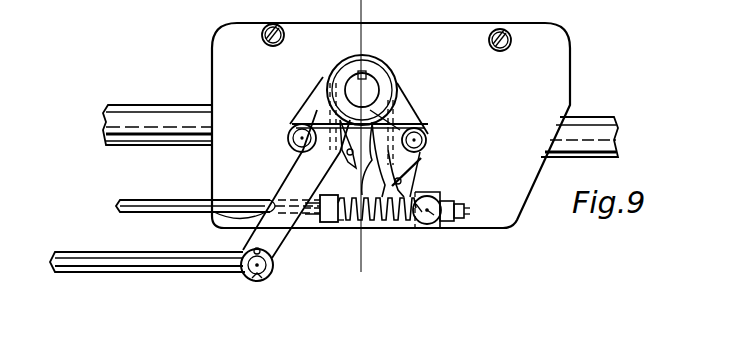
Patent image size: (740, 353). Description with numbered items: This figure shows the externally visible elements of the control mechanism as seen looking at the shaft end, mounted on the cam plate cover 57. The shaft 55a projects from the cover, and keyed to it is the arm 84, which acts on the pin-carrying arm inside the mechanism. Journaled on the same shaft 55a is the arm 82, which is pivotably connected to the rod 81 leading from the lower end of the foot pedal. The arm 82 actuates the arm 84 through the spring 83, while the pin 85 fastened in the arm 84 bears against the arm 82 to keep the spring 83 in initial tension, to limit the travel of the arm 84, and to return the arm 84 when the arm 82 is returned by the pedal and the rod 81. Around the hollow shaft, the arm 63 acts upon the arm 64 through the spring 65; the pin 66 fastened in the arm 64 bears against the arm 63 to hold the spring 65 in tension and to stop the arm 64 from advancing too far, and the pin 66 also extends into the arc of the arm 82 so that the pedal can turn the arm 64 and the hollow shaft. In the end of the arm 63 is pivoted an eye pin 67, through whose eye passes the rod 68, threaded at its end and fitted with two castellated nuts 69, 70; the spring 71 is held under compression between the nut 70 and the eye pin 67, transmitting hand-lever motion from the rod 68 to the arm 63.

The cam plate cover 57 is at (546, 72).
The shaft 55a is at (368, 90).
The arm 84 is at (321, 106).
The pin 85 is at (297, 141).
The pin 66 is at (419, 140).
The arm 64 is at (405, 118).
The spring 65 is at (401, 180).
The arm 63 is at (418, 181).
The spring 83 is at (345, 154).
The arm 82 is at (272, 243).
The rod 81 is at (178, 268).
The rod 68 is at (166, 210).
The castellated nut 70 is at (333, 224).
The spring 71 is at (385, 223).
The eye pin 67 is at (432, 220).
The castellated nut 69 is at (447, 198).